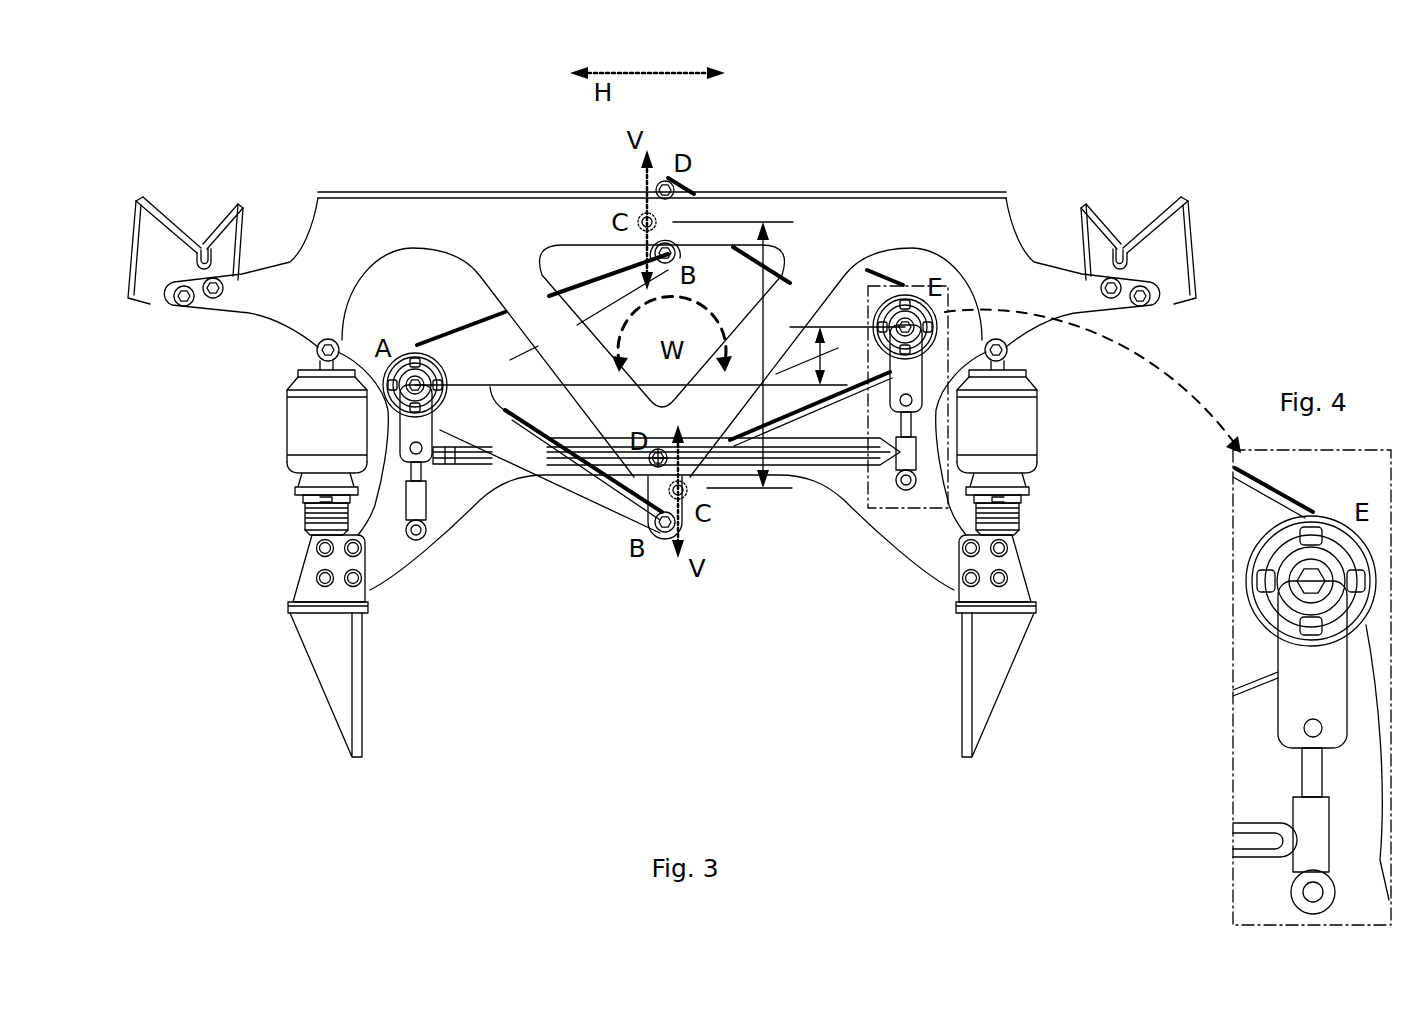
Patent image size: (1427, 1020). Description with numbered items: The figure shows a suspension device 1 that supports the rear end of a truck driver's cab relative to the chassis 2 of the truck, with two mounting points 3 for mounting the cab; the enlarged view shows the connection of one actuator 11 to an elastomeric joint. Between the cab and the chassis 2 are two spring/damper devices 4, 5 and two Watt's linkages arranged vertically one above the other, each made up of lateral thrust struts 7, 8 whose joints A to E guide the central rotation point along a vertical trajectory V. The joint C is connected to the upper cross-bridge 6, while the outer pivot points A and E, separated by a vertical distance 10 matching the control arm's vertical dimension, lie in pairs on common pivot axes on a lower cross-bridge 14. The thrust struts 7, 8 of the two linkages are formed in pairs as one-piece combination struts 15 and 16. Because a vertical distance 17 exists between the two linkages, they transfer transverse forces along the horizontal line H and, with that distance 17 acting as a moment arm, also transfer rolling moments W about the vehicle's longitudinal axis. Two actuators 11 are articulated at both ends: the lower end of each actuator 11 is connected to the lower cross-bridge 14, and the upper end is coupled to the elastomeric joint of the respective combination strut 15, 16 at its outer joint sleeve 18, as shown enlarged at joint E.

In FIG. 3, the suspension device 1 is at (593, 655).
In FIG. 3, the chassis 2 is at (378, 668).
In FIG. 3, the mounting point 3 is at (200, 208).
In FIG. 3, the spring/damper device 4 is at (245, 428).
In FIG. 3, the spring/damper device 5 is at (1065, 432).
In FIG. 3, the upper cross-bridge 6 is at (885, 225).
In FIG. 3, the lateral thrust strut 7 is at (578, 293).
In FIG. 3, the lateral thrust strut 8 is at (787, 397).
In FIG. 3, the vertical distance 10 is at (832, 356).
In FIG. 3, the actuator 11 is at (417, 502).
In FIG. 4, the actuator 11 is at (1313, 810).
In FIG. 3, the lower cross-bridge 14 is at (915, 545).
In FIG. 3, the combination strut 15 is at (470, 370).
In FIG. 3, the combination strut 16 is at (852, 295).
In FIG. 4, the combination strut 16 is at (1253, 510).
In FIG. 3, the vertical distance 17 is at (733, 355).
In FIG. 4, the outer joint sleeve 18 is at (1240, 574).